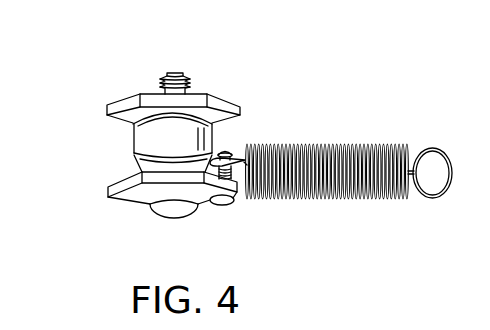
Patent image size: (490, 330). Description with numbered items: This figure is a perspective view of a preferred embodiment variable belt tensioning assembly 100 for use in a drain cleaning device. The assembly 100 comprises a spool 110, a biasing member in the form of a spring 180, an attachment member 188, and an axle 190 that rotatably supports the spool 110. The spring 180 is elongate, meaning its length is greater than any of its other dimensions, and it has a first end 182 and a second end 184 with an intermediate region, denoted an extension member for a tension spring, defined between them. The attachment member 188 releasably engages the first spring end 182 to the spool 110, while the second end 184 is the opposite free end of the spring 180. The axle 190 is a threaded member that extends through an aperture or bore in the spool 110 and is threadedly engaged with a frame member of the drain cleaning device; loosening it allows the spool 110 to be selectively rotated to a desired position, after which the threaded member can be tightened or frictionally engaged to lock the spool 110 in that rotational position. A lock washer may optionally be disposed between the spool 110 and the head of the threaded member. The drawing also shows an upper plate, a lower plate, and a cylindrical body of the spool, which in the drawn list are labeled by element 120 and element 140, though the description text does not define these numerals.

The belt tensioning assembly 100 is at (98, 75).
The spool 110 is at (223, 99).
The lower plate 120 is at (105, 189).
The cylindrical body 140 is at (105, 111).
The spring 180 is at (336, 147).
The first end 182 is at (239, 157).
The second end 184 is at (435, 149).
The attachment member 188 is at (226, 207).
The axle 190 is at (173, 216).